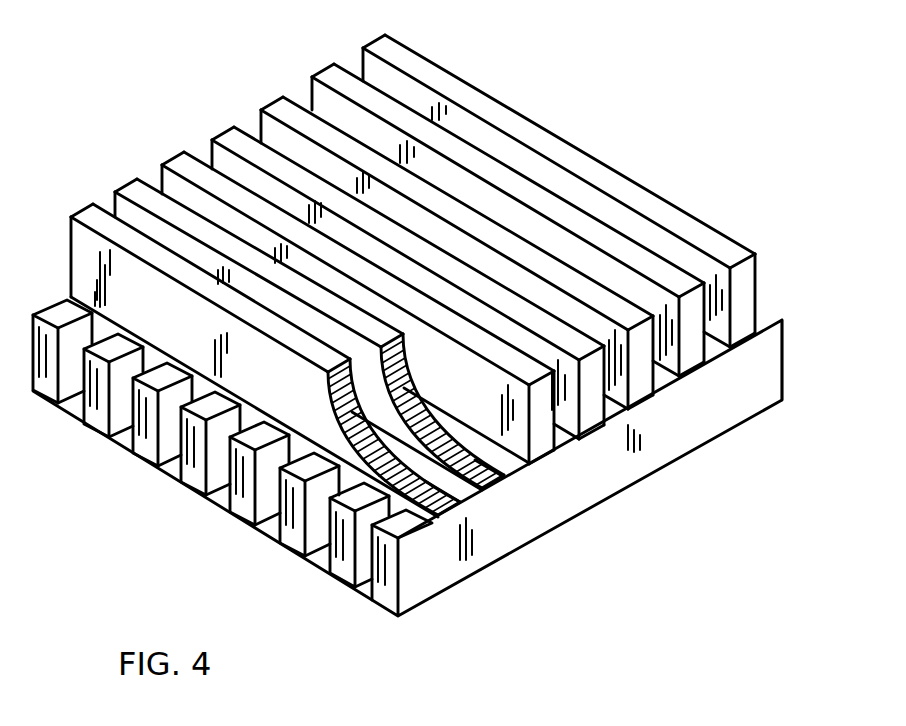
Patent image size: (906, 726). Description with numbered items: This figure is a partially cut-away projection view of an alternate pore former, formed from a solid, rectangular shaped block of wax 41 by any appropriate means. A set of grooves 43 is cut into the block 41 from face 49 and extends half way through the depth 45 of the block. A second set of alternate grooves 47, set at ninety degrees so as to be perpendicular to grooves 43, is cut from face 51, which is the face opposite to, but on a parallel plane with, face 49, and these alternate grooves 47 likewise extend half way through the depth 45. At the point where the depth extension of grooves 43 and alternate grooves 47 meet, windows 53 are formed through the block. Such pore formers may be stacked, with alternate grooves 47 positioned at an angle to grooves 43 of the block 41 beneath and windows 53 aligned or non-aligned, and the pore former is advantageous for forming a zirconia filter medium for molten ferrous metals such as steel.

The block of wax 41 is at (407, 326).
The grooves 43 is at (413, 297).
The depth 45 is at (793, 237).
The alternate grooves 47 is at (344, 611).
The face 49 is at (637, 192).
The face 51 is at (553, 537).
The windows 53 is at (505, 468).